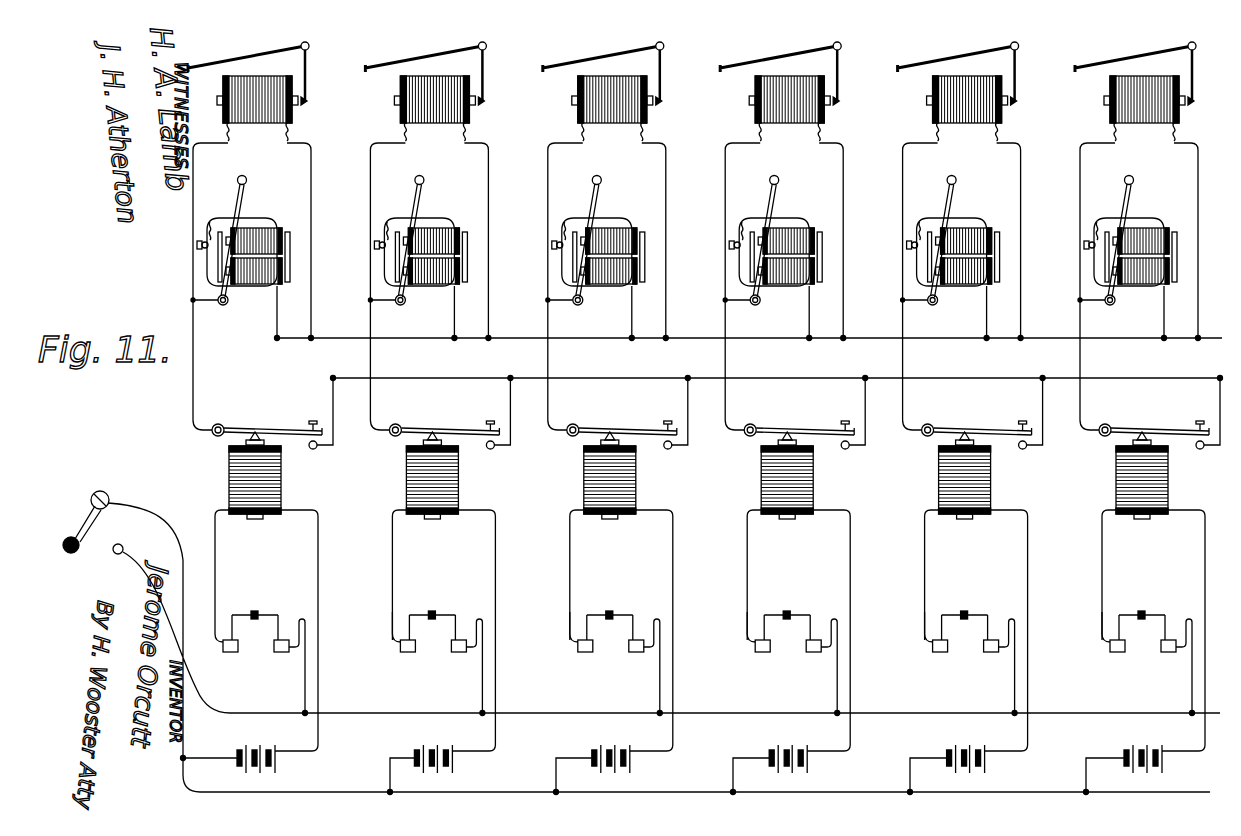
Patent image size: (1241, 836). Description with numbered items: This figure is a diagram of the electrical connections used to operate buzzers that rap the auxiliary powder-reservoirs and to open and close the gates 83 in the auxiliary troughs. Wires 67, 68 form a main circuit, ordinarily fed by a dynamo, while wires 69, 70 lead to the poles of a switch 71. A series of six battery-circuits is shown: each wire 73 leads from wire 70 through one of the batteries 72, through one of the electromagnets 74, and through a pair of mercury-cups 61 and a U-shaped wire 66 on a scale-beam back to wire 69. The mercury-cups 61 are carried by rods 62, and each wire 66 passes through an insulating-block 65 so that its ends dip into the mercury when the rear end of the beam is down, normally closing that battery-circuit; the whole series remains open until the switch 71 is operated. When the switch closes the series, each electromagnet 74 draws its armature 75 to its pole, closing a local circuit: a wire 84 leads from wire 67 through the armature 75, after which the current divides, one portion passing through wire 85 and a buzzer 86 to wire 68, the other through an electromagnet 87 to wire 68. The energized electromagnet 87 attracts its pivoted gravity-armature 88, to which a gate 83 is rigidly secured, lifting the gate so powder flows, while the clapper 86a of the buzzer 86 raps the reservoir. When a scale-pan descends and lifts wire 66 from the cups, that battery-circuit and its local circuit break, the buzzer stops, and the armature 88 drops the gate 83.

The mercury-cups 61 is at (1160, 658).
The rods 62 is at (1102, 627).
The insulating-blocks 65 is at (1141, 611).
The U-shaped pieces of wire 66 is at (1169, 617).
The wire of main circuit 67 is at (1143, 378).
The wire of main circuit 68 is at (1047, 341).
The wire 69 is at (1109, 706).
The wire 70 is at (1040, 784).
The switch 71 is at (146, 641).
The batteries 72 is at (699, 748).
The wires 73 is at (1204, 750).
The electromagnets 74 is at (1182, 474).
The armature 75 is at (1165, 423).
The gates 83 is at (1134, 59).
The wires 84 is at (1221, 425).
The wire 85 is at (1154, 313).
The buzzer 86 is at (687, 240).
The clapper 86a is at (1134, 179).
The electromagnet 87 is at (701, 114).
The armatures 88 is at (1194, 82).